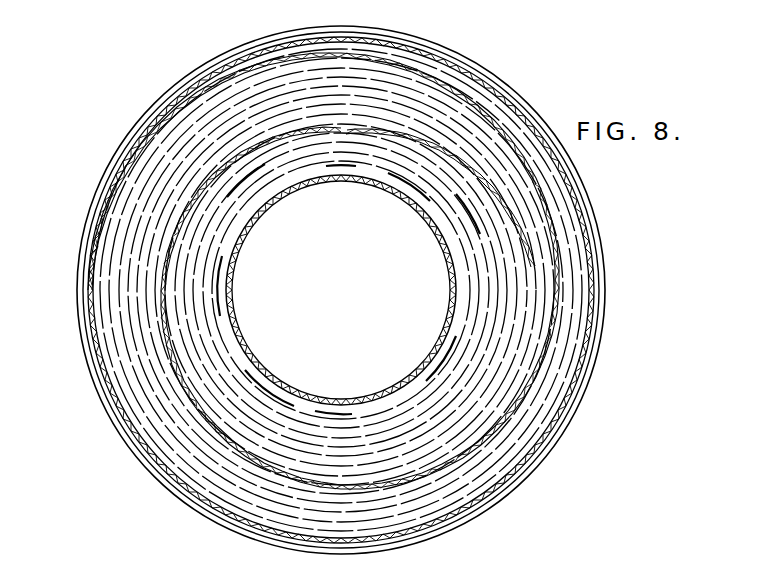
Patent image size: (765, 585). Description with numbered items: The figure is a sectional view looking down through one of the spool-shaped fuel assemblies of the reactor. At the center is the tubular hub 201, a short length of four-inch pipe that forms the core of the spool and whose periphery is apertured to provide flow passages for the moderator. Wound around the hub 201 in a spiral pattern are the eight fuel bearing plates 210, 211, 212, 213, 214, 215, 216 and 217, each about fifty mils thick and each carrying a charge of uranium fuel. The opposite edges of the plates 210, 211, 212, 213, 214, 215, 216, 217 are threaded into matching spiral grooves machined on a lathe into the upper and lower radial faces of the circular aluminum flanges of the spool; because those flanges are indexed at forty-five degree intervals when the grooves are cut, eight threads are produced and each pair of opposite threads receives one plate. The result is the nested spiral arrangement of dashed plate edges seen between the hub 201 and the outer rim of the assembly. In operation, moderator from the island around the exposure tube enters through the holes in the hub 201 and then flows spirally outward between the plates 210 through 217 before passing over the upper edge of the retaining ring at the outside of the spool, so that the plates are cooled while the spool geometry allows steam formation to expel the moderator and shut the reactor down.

The tubular hub 201 is at (285, 386).
The fuel bearing plate 210 is at (100, 368).
The fuel bearing plate 211 is at (205, 512).
The fuel bearing plate 212 is at (398, 537).
The fuel bearing plate 213 is at (548, 425).
The fuel bearing plate 214 is at (593, 290).
The fuel bearing plate 215 is at (488, 72).
The fuel bearing plate 216 is at (265, 44).
The fuel bearing plate 217 is at (110, 178).